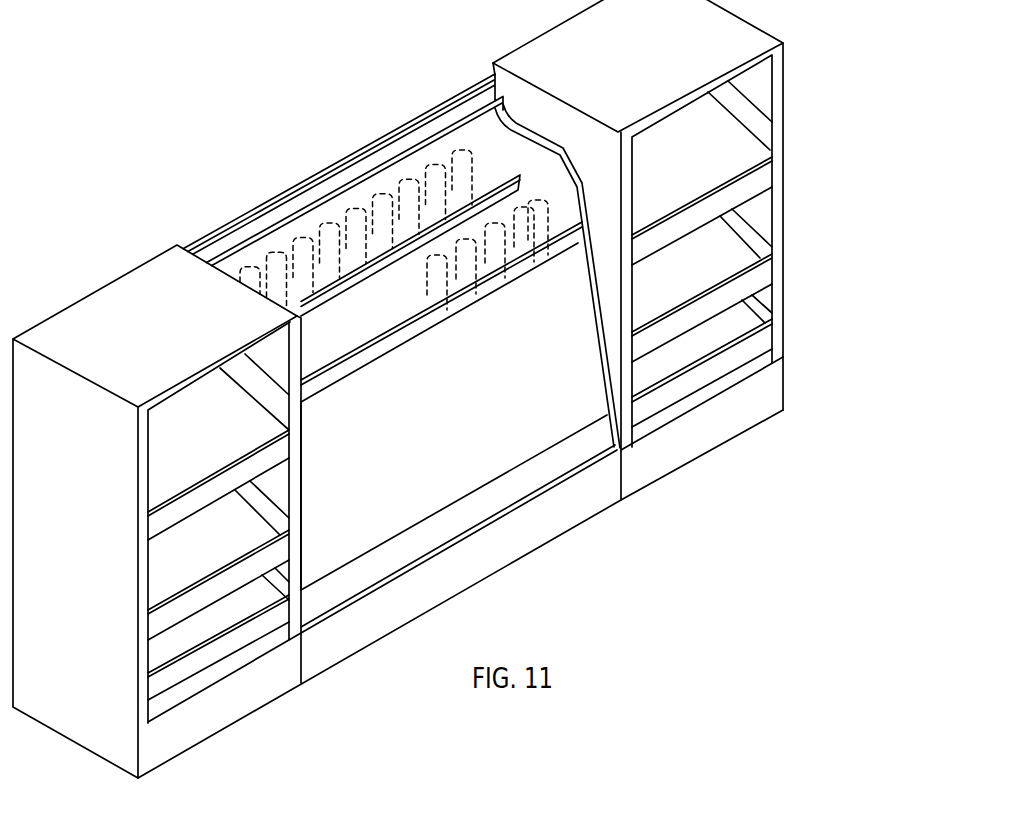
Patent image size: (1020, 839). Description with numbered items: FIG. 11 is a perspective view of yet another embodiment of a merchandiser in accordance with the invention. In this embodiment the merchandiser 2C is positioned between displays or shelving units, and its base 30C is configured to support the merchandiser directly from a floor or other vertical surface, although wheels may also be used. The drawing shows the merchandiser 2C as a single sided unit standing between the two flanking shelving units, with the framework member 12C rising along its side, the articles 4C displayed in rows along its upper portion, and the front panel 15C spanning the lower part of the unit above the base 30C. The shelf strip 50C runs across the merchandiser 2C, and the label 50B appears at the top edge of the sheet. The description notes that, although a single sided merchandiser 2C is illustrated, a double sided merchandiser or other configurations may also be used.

The merchandiser 2C is at (289, 169).
The display cards / articles 4C is at (380, 197).
The bent side frame member 12C is at (493, 143).
The lower shelf strip 50C is at (368, 308).
The front panel 15C is at (448, 472).
The base board 30C is at (563, 520).
The shelf strip (adjacent figure) 50B is at (338, 5).